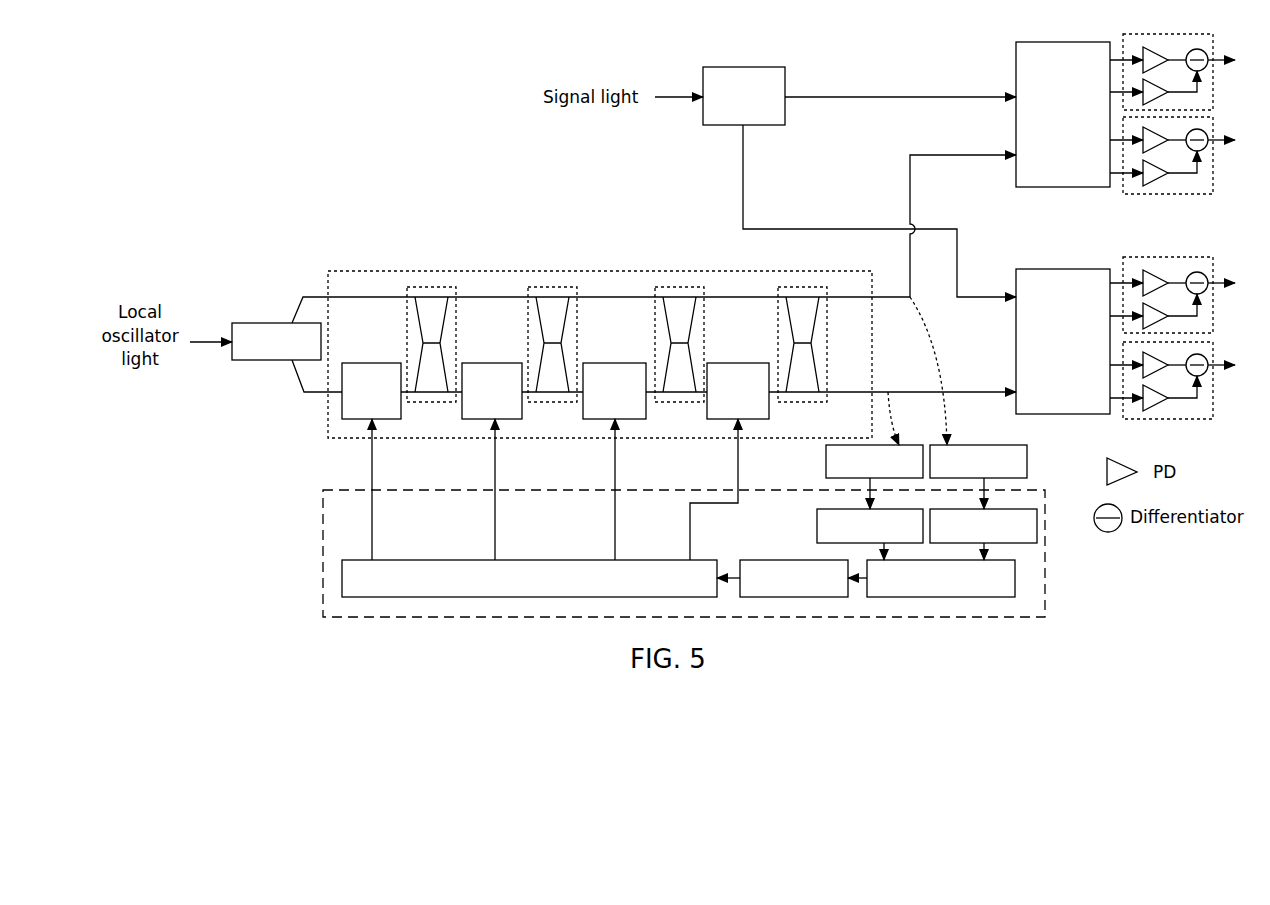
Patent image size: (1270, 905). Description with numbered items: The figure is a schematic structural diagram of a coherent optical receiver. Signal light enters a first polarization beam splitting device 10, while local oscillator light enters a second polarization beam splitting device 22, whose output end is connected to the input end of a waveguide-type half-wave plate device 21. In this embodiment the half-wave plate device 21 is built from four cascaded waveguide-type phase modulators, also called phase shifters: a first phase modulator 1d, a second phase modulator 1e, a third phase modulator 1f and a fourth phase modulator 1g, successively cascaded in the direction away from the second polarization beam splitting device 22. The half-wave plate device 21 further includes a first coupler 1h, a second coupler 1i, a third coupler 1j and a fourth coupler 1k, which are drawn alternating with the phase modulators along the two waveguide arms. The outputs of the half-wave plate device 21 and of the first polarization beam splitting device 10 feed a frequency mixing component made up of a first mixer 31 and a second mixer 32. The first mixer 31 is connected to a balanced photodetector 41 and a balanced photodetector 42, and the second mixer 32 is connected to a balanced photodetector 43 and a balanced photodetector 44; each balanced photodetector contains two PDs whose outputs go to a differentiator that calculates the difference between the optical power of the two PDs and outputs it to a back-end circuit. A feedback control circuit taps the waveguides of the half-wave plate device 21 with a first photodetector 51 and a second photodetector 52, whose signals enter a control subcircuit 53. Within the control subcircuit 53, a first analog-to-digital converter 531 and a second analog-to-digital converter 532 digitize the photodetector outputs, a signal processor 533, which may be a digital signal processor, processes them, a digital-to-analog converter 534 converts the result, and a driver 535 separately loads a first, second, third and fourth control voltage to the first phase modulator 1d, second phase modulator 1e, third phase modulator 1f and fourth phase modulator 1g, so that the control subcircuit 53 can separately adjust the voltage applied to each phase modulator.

The half-wave plate device 21 is at (358, 271).
The second polarization beam splitting device 22 is at (276, 341).
The first polarization beam splitting device 10 is at (744, 96).
The first phase modulator 1d is at (371, 391).
The second phase modulator 1e is at (492, 391).
The third phase modulator 1f is at (614, 391).
The fourth phase modulator 1g is at (738, 391).
The first coupler 1h is at (455, 332).
The second coupler 1i is at (577, 332).
The third coupler 1j is at (704, 332).
The fourth coupler 1k is at (827, 332).
The first mixer 31 is at (1063, 114).
The second mixer 32 is at (1063, 341).
The balanced photodetector 41 is at (1213, 45).
The balanced photodetector 42 is at (1213, 128).
The balanced photodetector 43 is at (1213, 268).
The balanced photodetector 44 is at (1213, 353).
The first photodetector 51 is at (874, 435).
The second photodetector 52 is at (968, 387).
The control subcircuit 53 is at (323, 548).
The first analog-to-digital converter 531 is at (870, 526).
The second analog-to-digital converter 532 is at (983, 526).
The signal processor 533 is at (941, 578).
The digital-to-analog converter 534 is at (794, 578).
The driver 535 is at (529, 578).